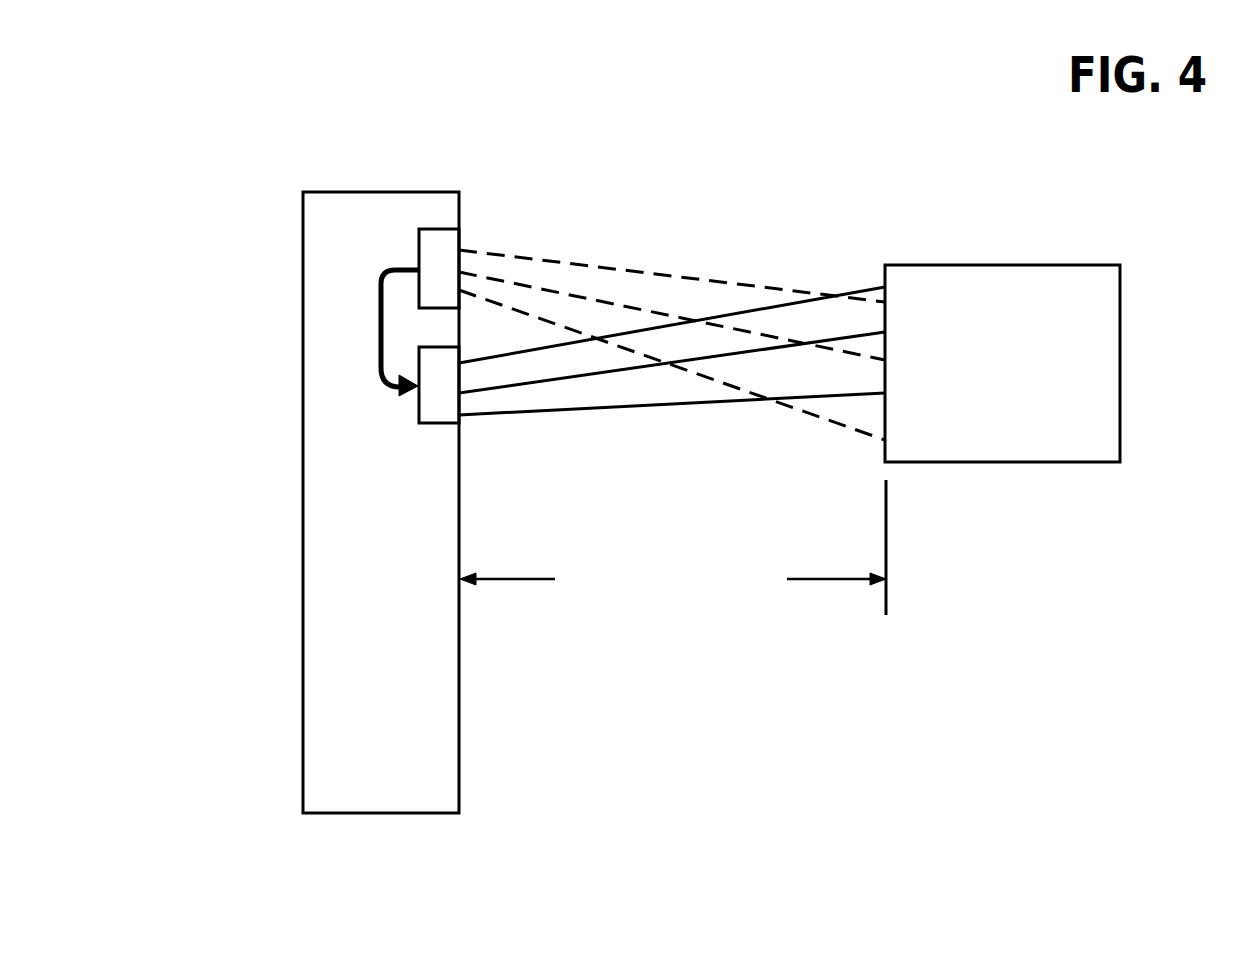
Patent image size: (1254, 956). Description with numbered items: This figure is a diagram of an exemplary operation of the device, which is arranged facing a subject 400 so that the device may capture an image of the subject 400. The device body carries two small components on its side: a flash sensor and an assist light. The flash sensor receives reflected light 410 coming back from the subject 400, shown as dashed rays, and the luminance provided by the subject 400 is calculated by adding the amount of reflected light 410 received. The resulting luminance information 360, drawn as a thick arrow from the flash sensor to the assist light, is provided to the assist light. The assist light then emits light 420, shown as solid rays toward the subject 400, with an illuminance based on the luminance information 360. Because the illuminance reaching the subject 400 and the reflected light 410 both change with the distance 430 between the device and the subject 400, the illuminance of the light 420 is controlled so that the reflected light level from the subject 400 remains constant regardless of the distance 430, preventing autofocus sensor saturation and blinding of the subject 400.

The luminance information 360 is at (381, 315).
The reflected light 410 is at (498, 301).
The light 420 is at (495, 361).
The subject 400 is at (1025, 391).
The distance 430 is at (673, 547).